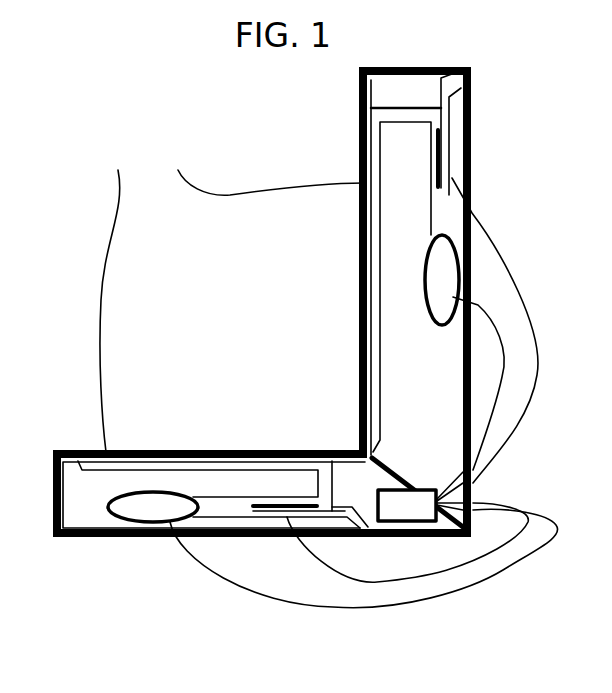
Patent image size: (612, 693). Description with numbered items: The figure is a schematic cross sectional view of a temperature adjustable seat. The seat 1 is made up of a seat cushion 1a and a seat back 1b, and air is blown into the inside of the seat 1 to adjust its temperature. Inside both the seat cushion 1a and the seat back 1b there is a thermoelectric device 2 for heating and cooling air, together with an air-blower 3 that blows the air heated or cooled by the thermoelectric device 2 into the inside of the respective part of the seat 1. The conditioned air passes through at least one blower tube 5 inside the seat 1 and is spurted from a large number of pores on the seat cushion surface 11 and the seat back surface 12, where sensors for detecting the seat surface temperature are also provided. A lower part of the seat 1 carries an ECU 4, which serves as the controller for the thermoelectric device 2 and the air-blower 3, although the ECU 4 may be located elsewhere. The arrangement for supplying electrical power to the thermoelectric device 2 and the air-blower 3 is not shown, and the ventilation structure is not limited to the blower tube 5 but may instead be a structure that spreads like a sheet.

The seat 1 is at (93, 147).
The seat cushion 1a is at (116, 297).
The seat back 1b is at (264, 169).
The thermoelectric device 2 is at (448, 153).
The air-blower 3 is at (433, 307).
The ECU 4 is at (410, 512).
The blower tube 5 is at (382, 243).
The seat cushion surface 11 is at (200, 451).
The seat back surface 12 is at (362, 283).